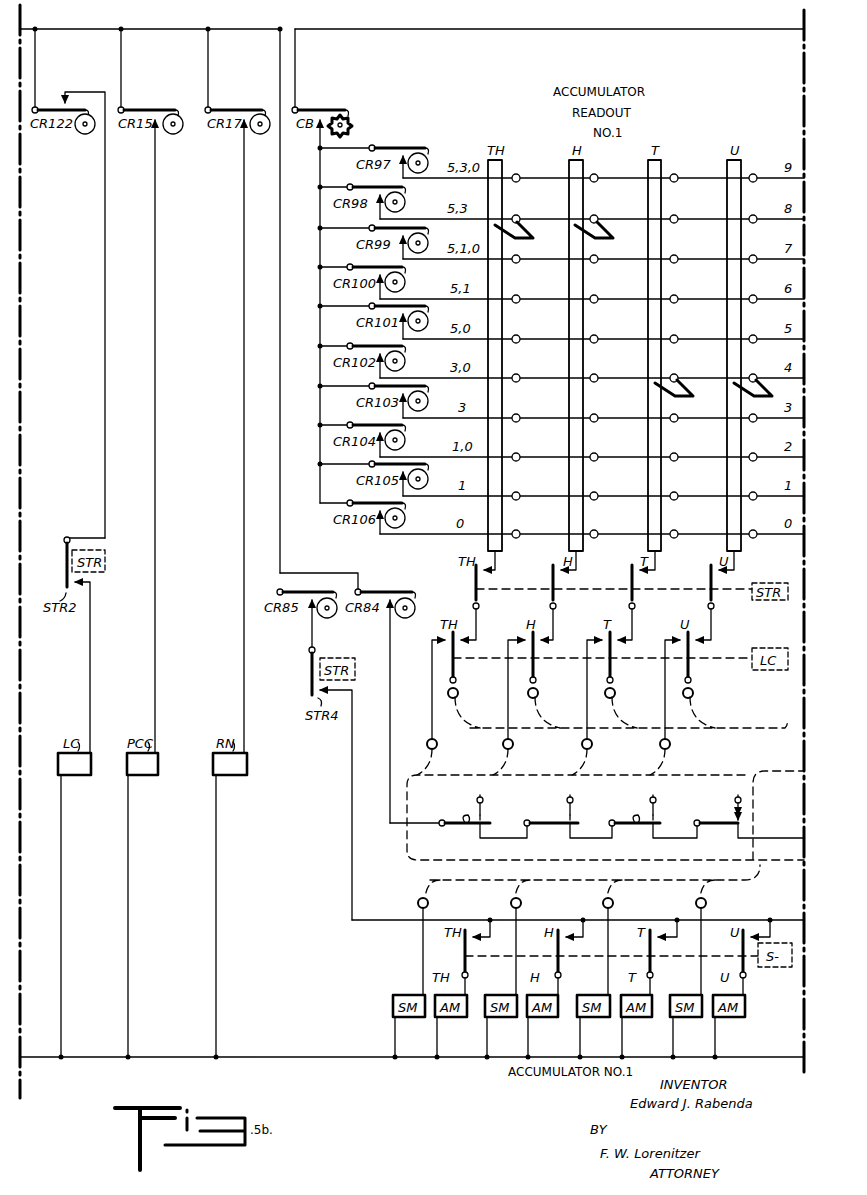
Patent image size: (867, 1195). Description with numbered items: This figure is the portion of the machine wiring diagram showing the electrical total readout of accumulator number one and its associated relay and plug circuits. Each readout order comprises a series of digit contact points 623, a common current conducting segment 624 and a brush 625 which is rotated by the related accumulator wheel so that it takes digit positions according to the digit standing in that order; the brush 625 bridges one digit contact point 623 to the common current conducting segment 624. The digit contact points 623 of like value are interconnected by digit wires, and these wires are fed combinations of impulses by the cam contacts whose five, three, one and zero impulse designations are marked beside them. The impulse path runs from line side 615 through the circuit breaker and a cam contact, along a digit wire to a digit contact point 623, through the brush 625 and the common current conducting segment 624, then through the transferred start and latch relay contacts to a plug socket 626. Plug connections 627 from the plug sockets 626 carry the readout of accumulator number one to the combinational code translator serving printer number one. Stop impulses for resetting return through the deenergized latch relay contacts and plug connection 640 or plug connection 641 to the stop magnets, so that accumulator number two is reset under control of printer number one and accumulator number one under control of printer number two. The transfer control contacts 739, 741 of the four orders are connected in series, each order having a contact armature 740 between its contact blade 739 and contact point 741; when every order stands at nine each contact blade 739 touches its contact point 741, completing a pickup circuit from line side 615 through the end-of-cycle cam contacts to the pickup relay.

The line side 615 is at (145, 29).
The digit contact points 623 is at (518, 182).
The common current conducting segment 624 is at (730, 355).
The brush 625 is at (715, 440).
The plug socket 626 is at (685, 693).
The plug connections 627 is at (780, 734).
The plug connection 640 is at (493, 778).
The plug connection 641 is at (591, 881).
The contact blade 739 is at (638, 828).
The contact armature 740 is at (738, 798).
The contact point 741 is at (731, 826).